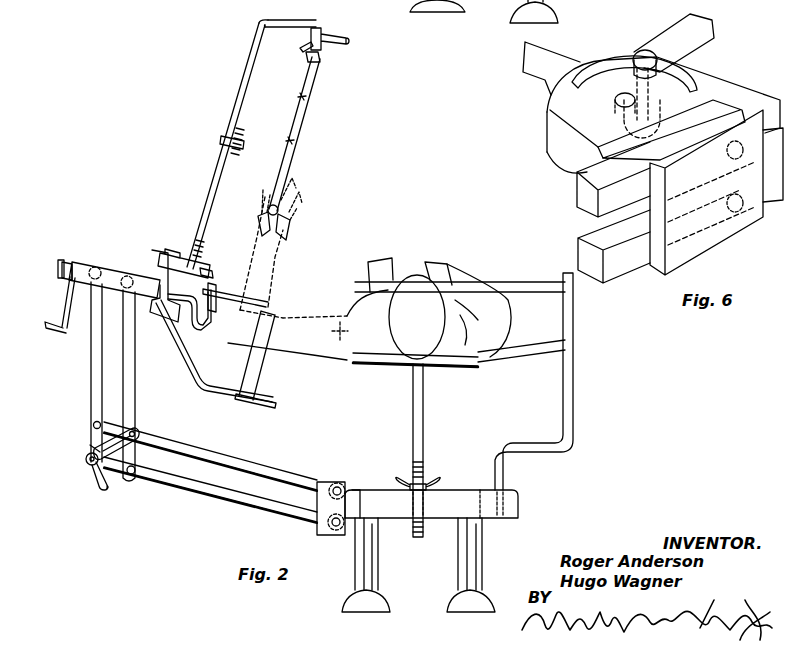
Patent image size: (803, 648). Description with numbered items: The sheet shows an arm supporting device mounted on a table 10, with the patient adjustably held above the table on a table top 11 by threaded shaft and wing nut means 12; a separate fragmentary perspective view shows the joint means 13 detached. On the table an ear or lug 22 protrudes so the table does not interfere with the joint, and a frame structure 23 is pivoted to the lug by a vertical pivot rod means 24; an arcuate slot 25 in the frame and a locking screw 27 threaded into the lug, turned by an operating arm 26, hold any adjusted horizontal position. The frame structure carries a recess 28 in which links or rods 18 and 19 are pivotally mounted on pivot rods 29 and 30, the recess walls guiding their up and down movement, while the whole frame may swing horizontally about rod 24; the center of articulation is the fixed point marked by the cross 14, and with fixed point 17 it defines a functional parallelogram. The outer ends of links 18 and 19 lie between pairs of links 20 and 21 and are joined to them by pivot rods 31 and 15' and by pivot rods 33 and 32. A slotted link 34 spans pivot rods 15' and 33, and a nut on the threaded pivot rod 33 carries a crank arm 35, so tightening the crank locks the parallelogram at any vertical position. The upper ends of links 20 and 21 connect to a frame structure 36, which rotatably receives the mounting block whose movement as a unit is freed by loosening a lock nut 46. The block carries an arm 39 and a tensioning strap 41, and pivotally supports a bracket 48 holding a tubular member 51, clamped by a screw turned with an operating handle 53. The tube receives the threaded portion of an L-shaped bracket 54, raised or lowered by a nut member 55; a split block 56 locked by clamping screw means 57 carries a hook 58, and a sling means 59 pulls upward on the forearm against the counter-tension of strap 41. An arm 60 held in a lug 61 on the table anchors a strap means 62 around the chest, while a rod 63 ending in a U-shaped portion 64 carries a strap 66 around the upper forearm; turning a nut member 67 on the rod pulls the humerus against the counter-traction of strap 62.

In FIG. 2, the table 10 is at (449, 510).
In FIG. 6, the table 10 is at (540, 78).
In FIG. 2, the table top 11 is at (440, 362).
In FIG. 2, the threaded shaft and wing nut means 12 is at (436, 462).
In FIG. 2, the joint means 13 is at (344, 479).
In FIG. 6, the joint means 13 is at (517, 147).
In FIG. 6, the cross 14 is at (654, 118).
In FIG. 2, the pivot rod 15' is at (136, 437).
In FIG. 2, the pivot point 17 is at (343, 330).
In FIG. 2, the link or rod 18 is at (218, 452).
In FIG. 6, the link or rod 18 is at (577, 199).
In FIG. 2, the link or rod 19 is at (203, 500).
In FIG. 6, the link or rod 19 is at (620, 270).
In FIG. 2, the pair of links or rods 20 is at (95, 365).
In FIG. 2, the pair of links or rods 21 is at (132, 365).
In FIG. 2, the ear or lug 22 is at (356, 495).
In FIG. 6, the ear or lug 22 is at (548, 160).
In FIG. 6, the frame structure 23 is at (698, 76).
In FIG. 6, the vertical pivot rod means 24 is at (614, 100).
In FIG. 6, the arcuate slot 25 is at (607, 64).
In FIG. 6, the operating arm 26 is at (700, 22).
In FIG. 6, the locking screw 27 is at (636, 86).
In FIG. 6, the recess 28 is at (728, 110).
In FIG. 6, the pivot rod 29 is at (740, 150).
In FIG. 6, the pivot rod 30 is at (738, 207).
In FIG. 2, the pivot rod 31 is at (93, 425).
In FIG. 2, the pivot rod 32 is at (133, 476).
In FIG. 2, the threaded pivot rod 33 is at (86, 459).
In FIG. 2, the slotted link 34 is at (92, 447).
In FIG. 2, the crank arm 35 is at (100, 478).
In FIG. 2, the frame structure 36 is at (110, 265).
In FIG. 2, the arm 39 is at (208, 388).
In FIG. 2, the tensioning strap 41 is at (260, 371).
In FIG. 2, the lock nut 46 is at (78, 264).
In FIG. 2, the bracket 48 is at (190, 262).
In FIG. 2, the tubular member 51 is at (215, 208).
In FIG. 2, the operating handle 53 is at (214, 270).
In FIG. 2, the L-shaped bracket 54 is at (275, 22).
In FIG. 2, the nut member 55 is at (243, 141).
In FIG. 2, the split block 56 is at (323, 31).
In FIG. 2, the clamping screw means 57 is at (300, 47).
In FIG. 2, the hook 58 is at (320, 58).
In FIG. 2, the sling means 59 is at (306, 112).
In FIG. 2, the arm 60 is at (575, 325).
In FIG. 2, the lug 61 is at (520, 498).
In FIG. 2, the strap means 62 is at (520, 292).
In FIG. 2, the rod 63 is at (56, 266).
In FIG. 2, the U-shaped portion 64 is at (203, 324).
In FIG. 2, the strap 66 is at (262, 306).
In FIG. 2, the nut member 67 is at (64, 262).